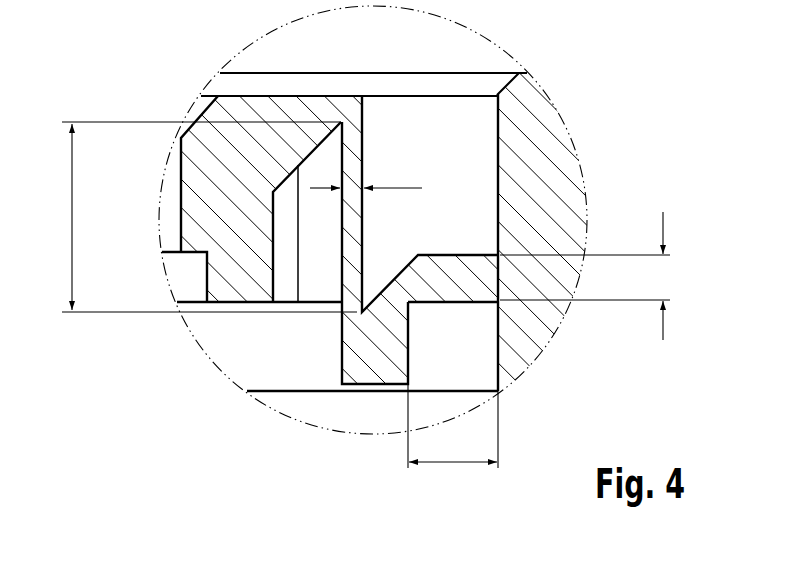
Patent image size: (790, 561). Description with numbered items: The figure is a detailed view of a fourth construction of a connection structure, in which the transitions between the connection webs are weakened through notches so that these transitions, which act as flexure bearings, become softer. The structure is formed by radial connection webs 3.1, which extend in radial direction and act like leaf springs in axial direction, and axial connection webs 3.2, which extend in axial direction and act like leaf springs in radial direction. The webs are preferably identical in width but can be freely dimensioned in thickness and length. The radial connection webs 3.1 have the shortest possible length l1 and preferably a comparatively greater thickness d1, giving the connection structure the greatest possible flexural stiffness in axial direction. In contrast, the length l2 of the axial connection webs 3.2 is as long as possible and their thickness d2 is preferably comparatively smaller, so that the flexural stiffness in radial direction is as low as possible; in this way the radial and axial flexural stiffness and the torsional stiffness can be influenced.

The radial connection web 3.1 is at (460, 280).
The axial connection web 3.2 is at (350, 227).
The length of the axial connection webs l2 is at (205, 217).
The thickness of the axial connection webs d2 is at (368, 172).
The thickness of the radial connection webs d1 is at (588, 276).
The length of the radial connection webs l1 is at (453, 442).